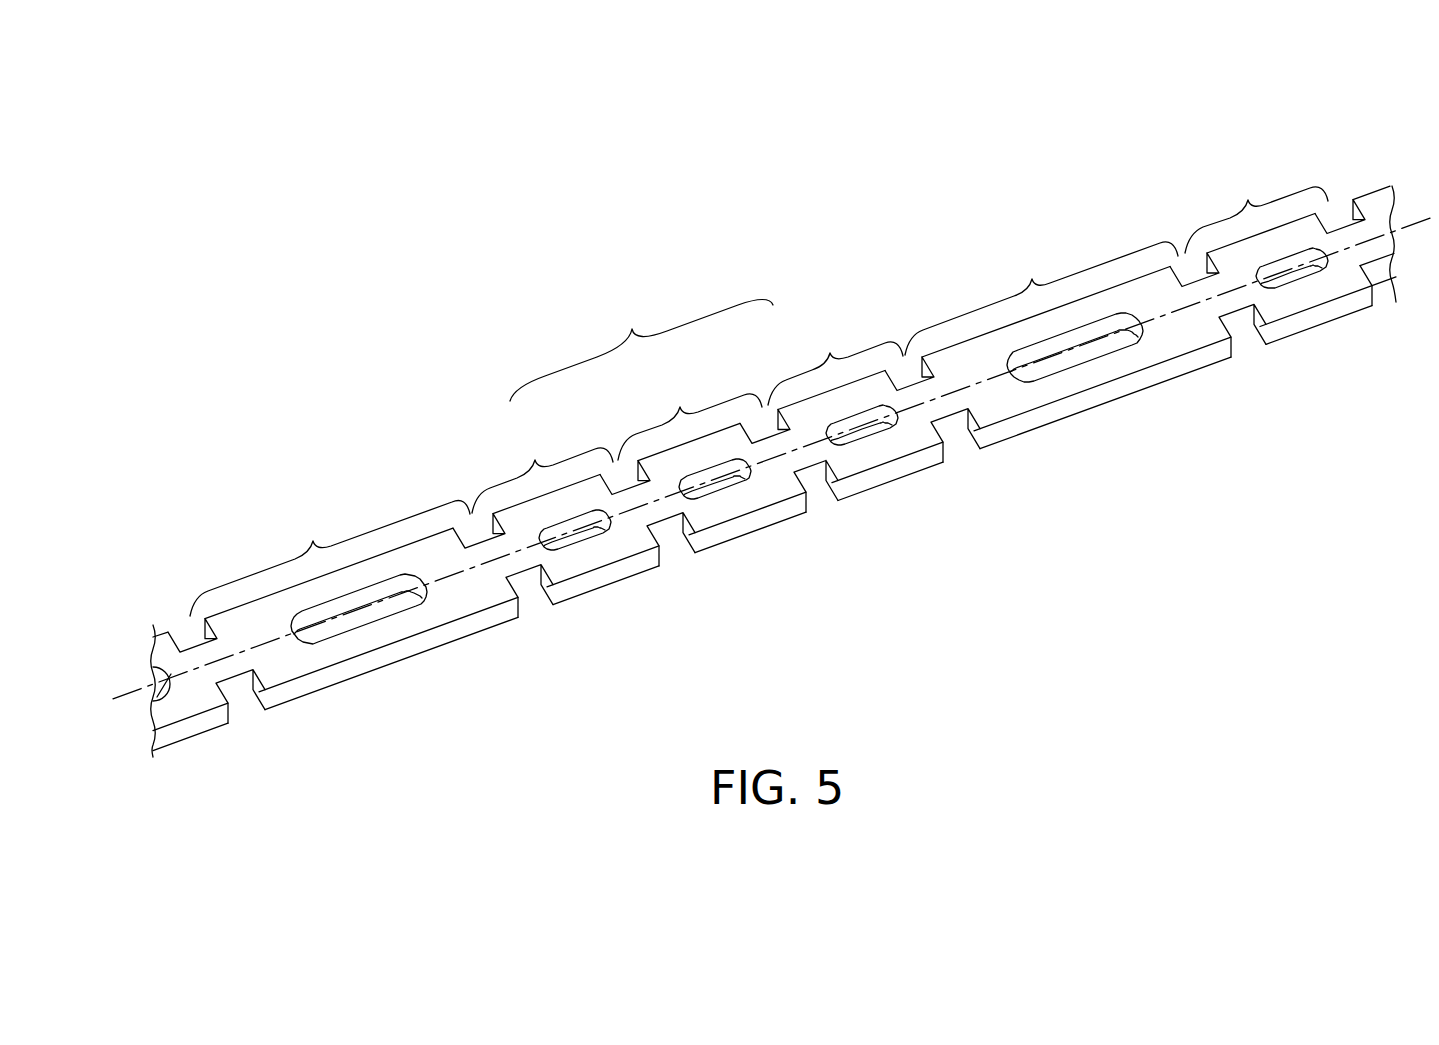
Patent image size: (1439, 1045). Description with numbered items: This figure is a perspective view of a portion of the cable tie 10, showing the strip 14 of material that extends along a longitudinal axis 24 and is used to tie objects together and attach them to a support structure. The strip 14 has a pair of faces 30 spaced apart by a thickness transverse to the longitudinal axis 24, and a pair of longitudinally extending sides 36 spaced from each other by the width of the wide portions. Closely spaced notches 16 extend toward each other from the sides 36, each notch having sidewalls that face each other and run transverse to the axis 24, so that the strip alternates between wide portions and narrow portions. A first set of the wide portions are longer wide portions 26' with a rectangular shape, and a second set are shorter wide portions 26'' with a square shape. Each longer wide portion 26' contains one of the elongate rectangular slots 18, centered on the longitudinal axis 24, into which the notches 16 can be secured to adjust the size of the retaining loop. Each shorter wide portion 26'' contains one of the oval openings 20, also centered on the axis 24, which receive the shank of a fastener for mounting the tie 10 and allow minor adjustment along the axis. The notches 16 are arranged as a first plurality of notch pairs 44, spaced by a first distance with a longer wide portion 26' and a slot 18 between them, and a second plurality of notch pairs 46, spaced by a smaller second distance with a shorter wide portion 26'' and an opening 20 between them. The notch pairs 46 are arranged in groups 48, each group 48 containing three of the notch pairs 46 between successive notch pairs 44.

The cable tie 10 is at (698, 223).
The strip 14 is at (161, 753).
The notches 16 is at (244, 707).
The slots 18 is at (347, 620).
The openings 20 is at (585, 528).
The longitudinal axis 24 is at (1407, 224).
The longer wide portions 26' is at (745, 525).
The shorter wide portions 26'' is at (959, 470).
The faces 30 is at (458, 598).
The longitudinally extending sides 36 is at (1197, 363).
The first plurality of notch pairs 44 is at (684, 429).
The second plurality of notch pairs 46 is at (900, 340).
The groups 48 is at (641, 349).